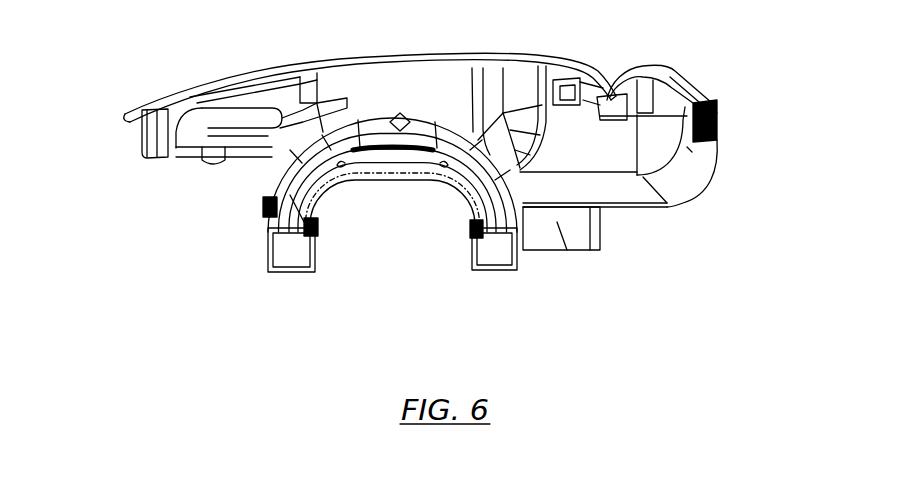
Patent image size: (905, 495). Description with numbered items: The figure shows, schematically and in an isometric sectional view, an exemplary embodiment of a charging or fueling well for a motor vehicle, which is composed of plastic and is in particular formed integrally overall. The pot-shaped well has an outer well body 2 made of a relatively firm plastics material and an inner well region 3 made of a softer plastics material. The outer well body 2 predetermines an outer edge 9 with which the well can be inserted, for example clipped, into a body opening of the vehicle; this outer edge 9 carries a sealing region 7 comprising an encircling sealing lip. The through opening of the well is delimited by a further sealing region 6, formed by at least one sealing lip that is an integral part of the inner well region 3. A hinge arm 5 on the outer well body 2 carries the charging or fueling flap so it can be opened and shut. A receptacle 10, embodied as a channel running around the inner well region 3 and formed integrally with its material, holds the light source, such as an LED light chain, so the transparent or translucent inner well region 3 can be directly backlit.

The outer well body 2 is at (277, 153).
The inner well region 3 is at (285, 218).
The hinge arm 5 is at (713, 102).
The sealing region 6 is at (312, 224).
The sealing region 7 is at (130, 119).
The outer edge 9 is at (590, 63).
The receptacle 10 is at (500, 253).